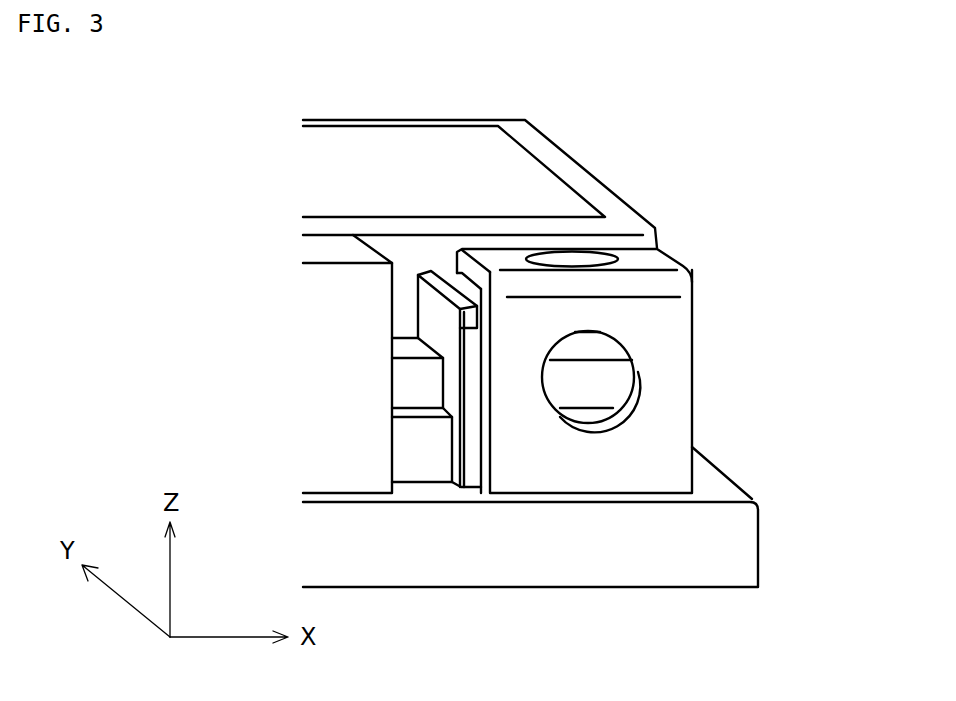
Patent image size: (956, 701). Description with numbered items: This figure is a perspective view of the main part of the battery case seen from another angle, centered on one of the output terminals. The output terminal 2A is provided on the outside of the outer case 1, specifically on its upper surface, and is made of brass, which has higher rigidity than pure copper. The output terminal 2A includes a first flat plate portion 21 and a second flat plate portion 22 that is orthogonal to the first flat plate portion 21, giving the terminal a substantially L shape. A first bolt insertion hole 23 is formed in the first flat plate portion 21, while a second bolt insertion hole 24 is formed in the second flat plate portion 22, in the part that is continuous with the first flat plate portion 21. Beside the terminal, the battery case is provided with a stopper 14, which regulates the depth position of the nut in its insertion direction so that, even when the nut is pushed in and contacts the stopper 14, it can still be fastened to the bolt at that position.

The outer case 1 is at (790, 567).
The output terminal 2A is at (720, 351).
The stopper 14 is at (432, 316).
The first flat plate portion 21 is at (672, 413).
The second flat plate portion 22 is at (652, 263).
The first bolt insertion hole 23 is at (613, 413).
The second bolt insertion hole 24 is at (585, 256).